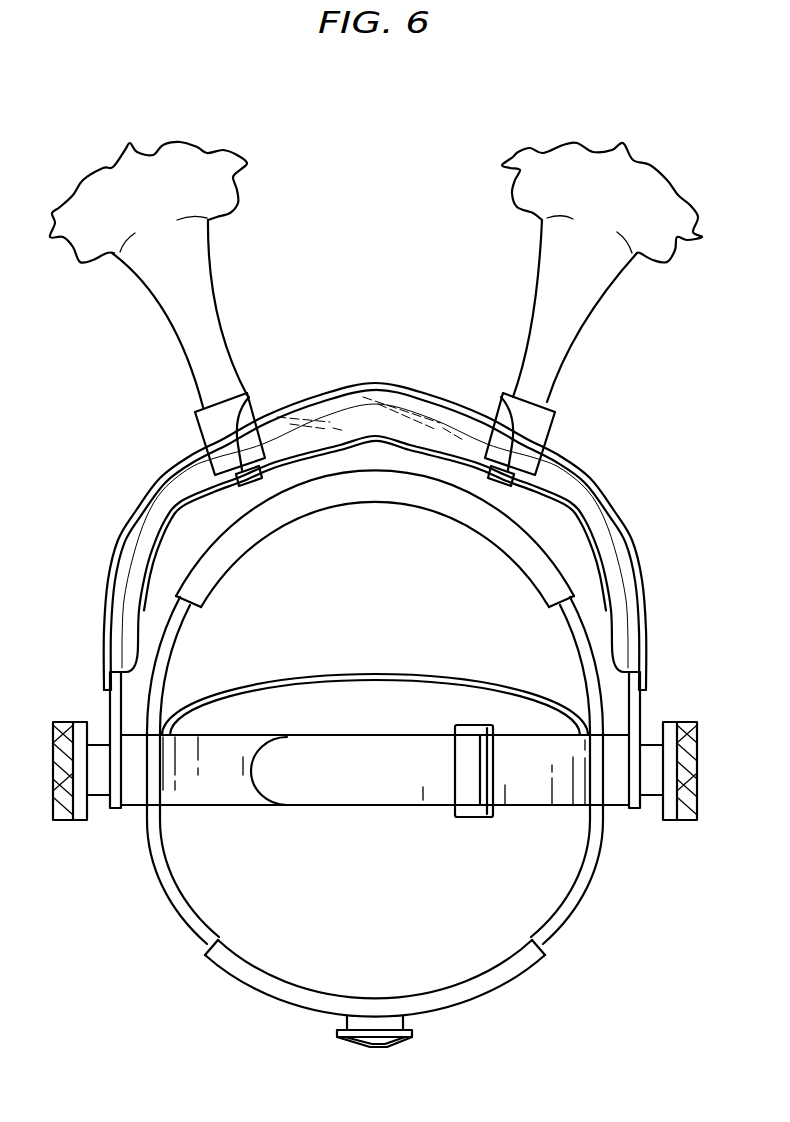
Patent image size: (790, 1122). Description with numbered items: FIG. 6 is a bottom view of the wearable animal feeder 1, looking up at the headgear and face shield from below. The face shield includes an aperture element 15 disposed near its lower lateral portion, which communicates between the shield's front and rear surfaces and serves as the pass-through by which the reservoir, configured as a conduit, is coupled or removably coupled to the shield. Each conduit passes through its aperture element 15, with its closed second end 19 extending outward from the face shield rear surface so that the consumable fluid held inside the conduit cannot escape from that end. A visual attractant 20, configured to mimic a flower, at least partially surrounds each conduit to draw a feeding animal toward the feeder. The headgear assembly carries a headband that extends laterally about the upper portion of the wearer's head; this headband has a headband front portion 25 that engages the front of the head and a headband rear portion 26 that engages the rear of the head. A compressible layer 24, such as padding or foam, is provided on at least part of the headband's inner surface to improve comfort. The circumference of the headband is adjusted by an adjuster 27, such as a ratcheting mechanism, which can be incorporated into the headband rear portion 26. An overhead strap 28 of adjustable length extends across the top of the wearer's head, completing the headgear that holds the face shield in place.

The wearable animal feeder 1 is at (585, 84).
The aperture element 15 is at (250, 397).
The second end 19 is at (247, 481).
The visual attractant 20 is at (155, 167).
The compressible layer 24 is at (368, 480).
The headband front portion 25 is at (183, 617).
The headband rear portion 26 is at (557, 927).
The adjuster 27 is at (372, 1047).
The overhead strap 28 is at (378, 815).